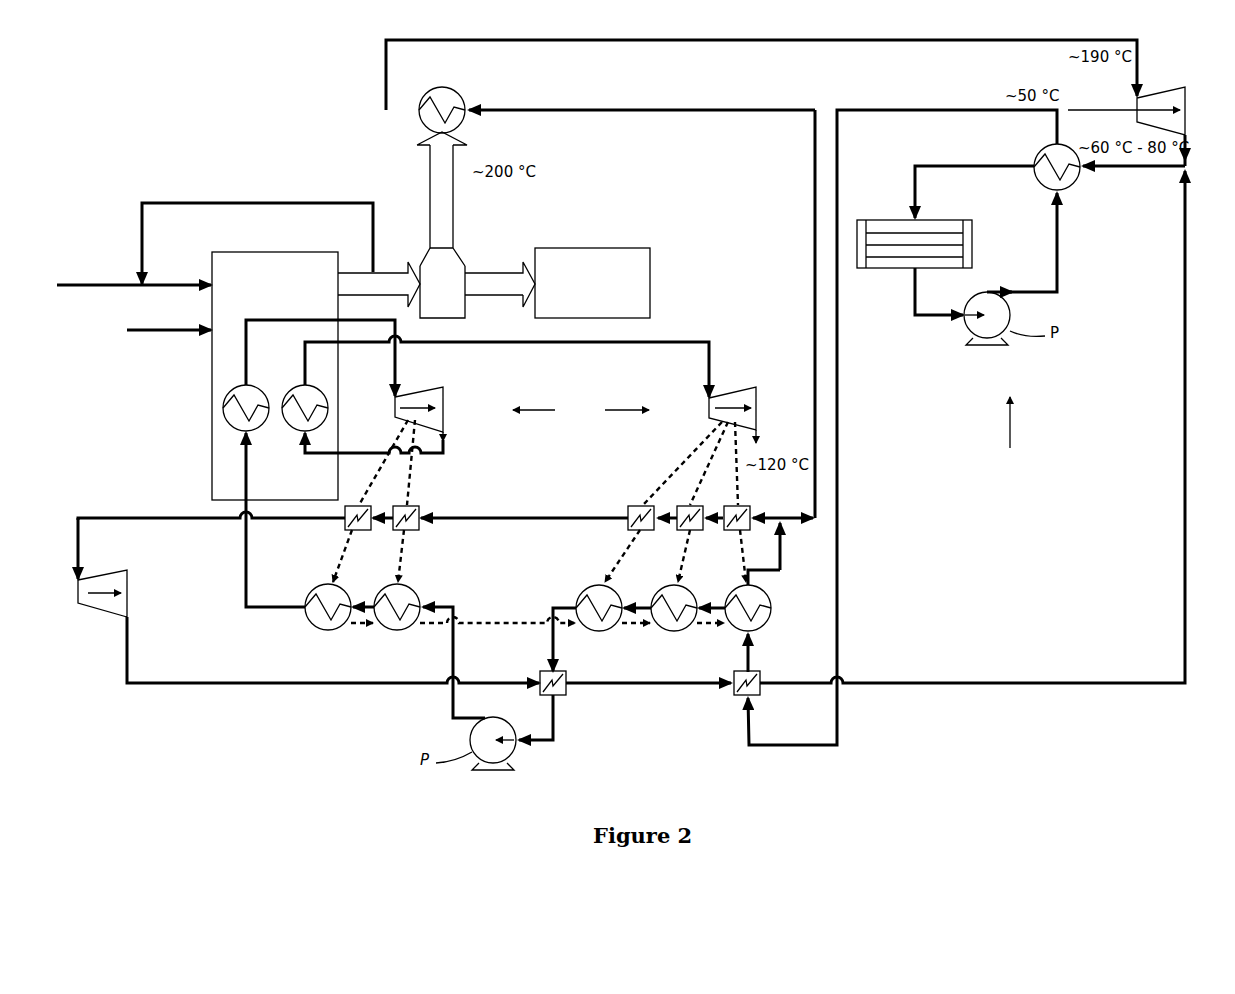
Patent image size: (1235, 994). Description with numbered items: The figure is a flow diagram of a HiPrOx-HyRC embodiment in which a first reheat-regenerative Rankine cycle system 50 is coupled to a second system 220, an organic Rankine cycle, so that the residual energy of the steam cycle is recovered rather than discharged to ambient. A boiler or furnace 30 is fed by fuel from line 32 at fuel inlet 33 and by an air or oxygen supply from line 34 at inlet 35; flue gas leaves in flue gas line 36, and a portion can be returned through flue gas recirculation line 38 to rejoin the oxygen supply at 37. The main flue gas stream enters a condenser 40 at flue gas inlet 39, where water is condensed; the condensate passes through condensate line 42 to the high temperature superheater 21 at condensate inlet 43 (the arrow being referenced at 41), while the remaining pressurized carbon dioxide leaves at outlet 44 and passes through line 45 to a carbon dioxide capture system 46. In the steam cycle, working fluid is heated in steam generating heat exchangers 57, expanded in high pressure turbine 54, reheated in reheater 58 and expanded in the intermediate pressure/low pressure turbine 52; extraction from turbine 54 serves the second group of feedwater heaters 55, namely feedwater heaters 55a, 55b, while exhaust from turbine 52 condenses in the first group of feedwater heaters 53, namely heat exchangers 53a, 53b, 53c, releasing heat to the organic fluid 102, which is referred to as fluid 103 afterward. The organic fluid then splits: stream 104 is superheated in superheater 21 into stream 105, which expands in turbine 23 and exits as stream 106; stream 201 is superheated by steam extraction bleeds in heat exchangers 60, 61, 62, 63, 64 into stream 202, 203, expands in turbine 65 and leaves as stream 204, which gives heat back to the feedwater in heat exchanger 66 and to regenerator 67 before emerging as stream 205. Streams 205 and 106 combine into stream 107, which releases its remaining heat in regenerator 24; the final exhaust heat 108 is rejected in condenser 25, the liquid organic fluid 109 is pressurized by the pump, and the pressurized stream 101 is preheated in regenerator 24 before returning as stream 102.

The high temperature superheater 21 is at (420, 116).
The turbine 23 is at (1188, 98).
The regenerator 24 is at (1040, 185).
The condenser 25 is at (893, 218).
The boiler or furnace 30 is at (223, 452).
The fuel supply line 32 is at (166, 333).
The fuel inlet 33 is at (212, 326).
The air or oxygen supply line 34 is at (98, 283).
The air or oxygen inlet 35 is at (230, 264).
The flue gas line 36 is at (382, 272).
The recycle inlet arrow 37 is at (138, 283).
The flue gas recirculation line 38 is at (248, 202).
The flue gas inlet 39 is at (423, 262).
The condenser 40 is at (453, 320).
The CO2 stream right wall 41 is at (455, 248).
The condensate line 42 is at (430, 190).
The condensate inlet 43 is at (435, 134).
The outlet 44 is at (470, 285).
The line 45 is at (502, 300).
The carbon dioxide capture system 46 is at (640, 300).
The reheat-regenerative Rankine cycle system 50 is at (581, 411).
The intermediate pressure/low pressure turbine 52 is at (758, 400).
The first group of feedwater heaters 53 is at (747, 623).
The feedwater heater 53a is at (735, 632).
The feedwater heater 53b is at (674, 632).
The feedwater heater 53c is at (600, 632).
The high pressure turbine 54 is at (443, 398).
The second group of feedwater heaters 55 is at (358, 610).
The feedwater heater 55a is at (392, 632).
The feedwater heater 55b is at (320, 632).
The steam generating heat exchangers 57 is at (223, 412).
The reheater 58 is at (328, 412).
The heat exchanger 60 is at (752, 512).
The heat exchanger 61 is at (680, 530).
The heat exchanger 62 is at (633, 530).
The heat exchanger 63 is at (418, 508).
The heat exchanger 64 is at (350, 532).
The turbine 65 is at (105, 612).
The heat exchanger 66 is at (568, 692).
The regenerator 67 is at (762, 692).
The pressurized stream 101 is at (1059, 258).
The organic fluid 102 is at (975, 112).
The fluid 103 is at (782, 553).
The stream 104 is at (815, 245).
The stream 105 is at (975, 42).
The stream 106 is at (1188, 148).
The stream 107 is at (1140, 168).
The final exhaust heat 108 is at (975, 168).
The organic fluid 109 is at (915, 318).
The stream 201 is at (778, 535).
The stream 202 is at (525, 522).
The stream 203 is at (96, 517).
The stream 204 is at (335, 688).
The stream 205 is at (1035, 688).
The second system 220 is at (1010, 438).